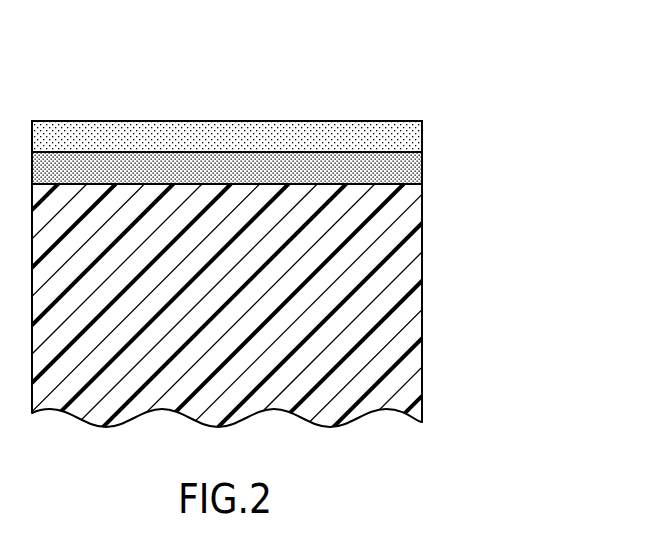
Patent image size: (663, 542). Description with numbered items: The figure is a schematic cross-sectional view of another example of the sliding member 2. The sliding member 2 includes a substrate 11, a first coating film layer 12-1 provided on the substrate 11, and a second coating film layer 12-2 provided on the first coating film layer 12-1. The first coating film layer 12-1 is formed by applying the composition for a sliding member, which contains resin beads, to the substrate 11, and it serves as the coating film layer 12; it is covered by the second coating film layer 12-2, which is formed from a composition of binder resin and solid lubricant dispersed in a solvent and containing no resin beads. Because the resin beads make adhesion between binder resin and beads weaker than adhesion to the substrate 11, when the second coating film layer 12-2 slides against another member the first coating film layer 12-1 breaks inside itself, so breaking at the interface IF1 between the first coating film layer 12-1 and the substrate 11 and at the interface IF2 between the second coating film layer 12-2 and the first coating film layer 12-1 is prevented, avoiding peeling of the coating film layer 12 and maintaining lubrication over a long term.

The sliding member 2 is at (449, 93).
The substrate 11 is at (422, 268).
The coating film layer 12 is at (227, 152).
The first coating film layer 12-1 is at (422, 170).
The second coating film layer 12-2 is at (422, 132).
The interface between the first coating film layer and the substrate IF1 is at (390, 183).
The interface between the second coating film layer and the first coating film layer IF2 is at (346, 151).